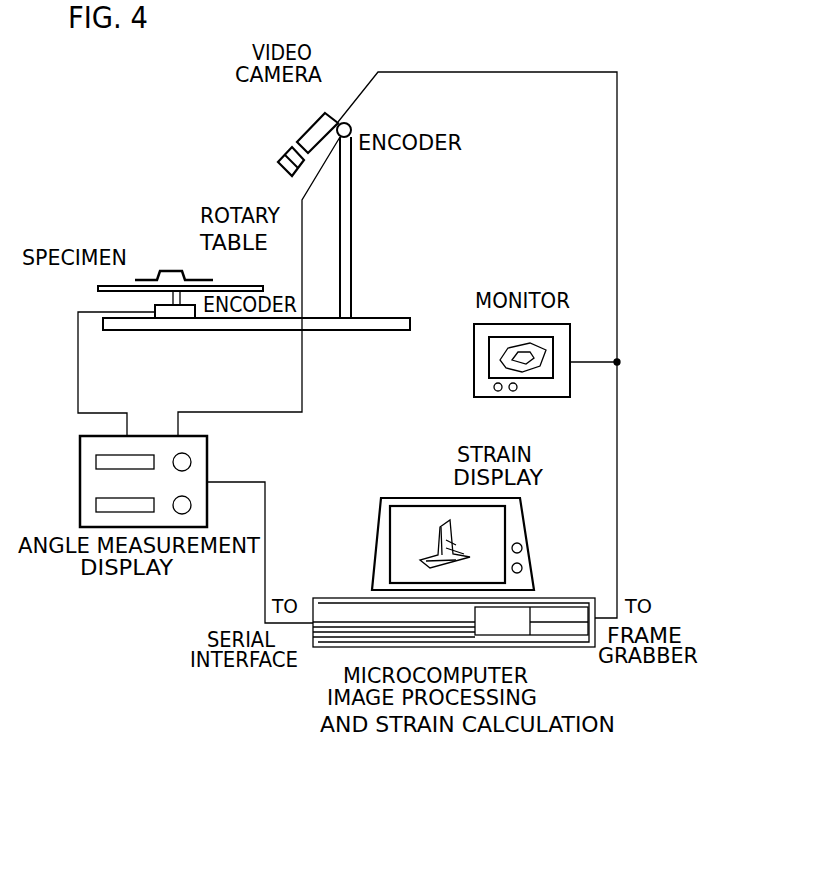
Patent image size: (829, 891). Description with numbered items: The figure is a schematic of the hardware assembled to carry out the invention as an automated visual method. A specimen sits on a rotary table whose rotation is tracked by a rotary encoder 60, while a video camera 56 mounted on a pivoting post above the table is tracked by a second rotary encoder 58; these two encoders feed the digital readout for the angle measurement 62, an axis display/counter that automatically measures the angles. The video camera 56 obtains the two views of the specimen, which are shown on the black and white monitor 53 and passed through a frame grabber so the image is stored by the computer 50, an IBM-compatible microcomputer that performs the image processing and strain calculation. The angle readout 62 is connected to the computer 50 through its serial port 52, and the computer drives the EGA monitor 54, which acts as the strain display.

The computer 50 is at (348, 600).
The serial port 52 is at (265, 570).
The monitor 53 is at (474, 360).
The monitor 54 is at (407, 498).
The video camera 56 is at (313, 128).
The rotary encoder 58 is at (350, 125).
The rotary encoder 60 is at (168, 318).
The digital readout for the angle measurement 62 is at (209, 469).